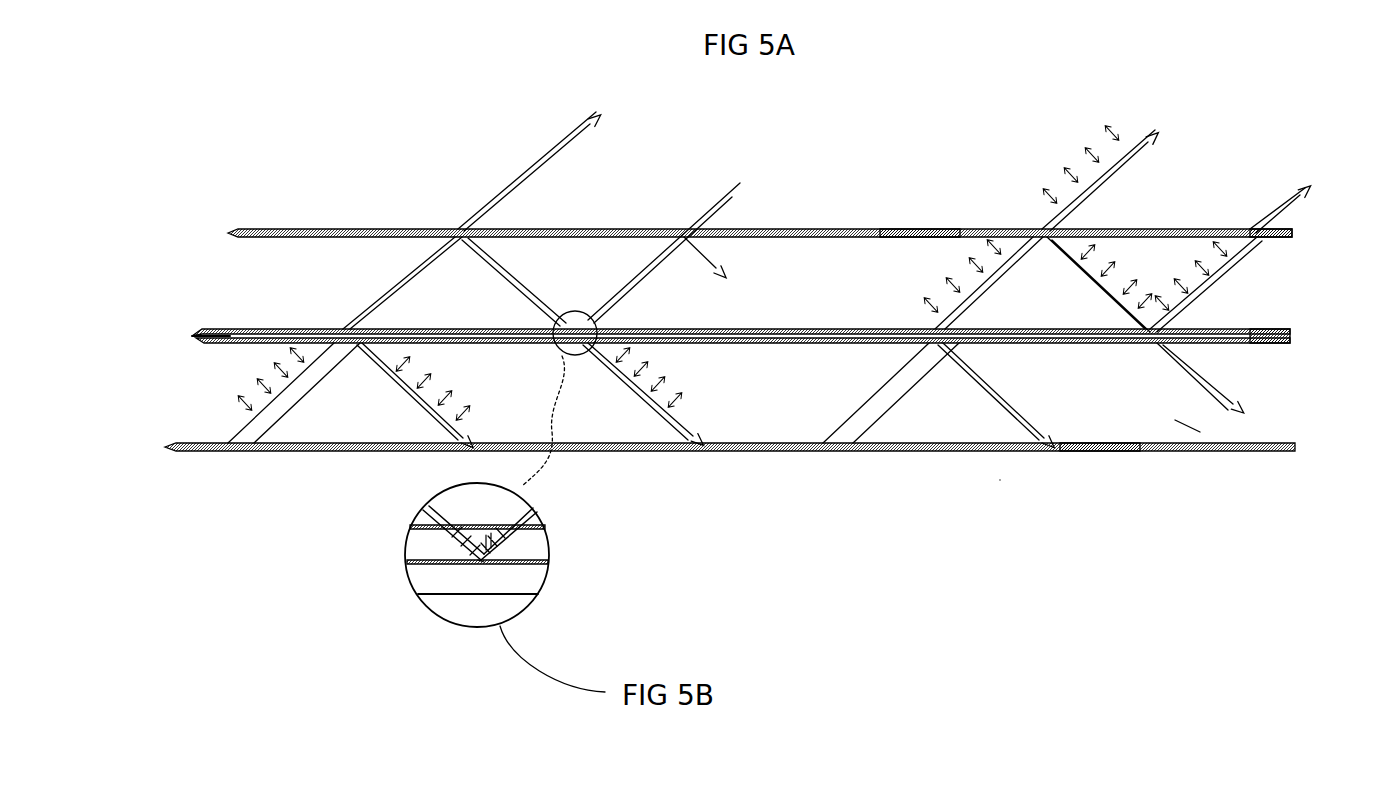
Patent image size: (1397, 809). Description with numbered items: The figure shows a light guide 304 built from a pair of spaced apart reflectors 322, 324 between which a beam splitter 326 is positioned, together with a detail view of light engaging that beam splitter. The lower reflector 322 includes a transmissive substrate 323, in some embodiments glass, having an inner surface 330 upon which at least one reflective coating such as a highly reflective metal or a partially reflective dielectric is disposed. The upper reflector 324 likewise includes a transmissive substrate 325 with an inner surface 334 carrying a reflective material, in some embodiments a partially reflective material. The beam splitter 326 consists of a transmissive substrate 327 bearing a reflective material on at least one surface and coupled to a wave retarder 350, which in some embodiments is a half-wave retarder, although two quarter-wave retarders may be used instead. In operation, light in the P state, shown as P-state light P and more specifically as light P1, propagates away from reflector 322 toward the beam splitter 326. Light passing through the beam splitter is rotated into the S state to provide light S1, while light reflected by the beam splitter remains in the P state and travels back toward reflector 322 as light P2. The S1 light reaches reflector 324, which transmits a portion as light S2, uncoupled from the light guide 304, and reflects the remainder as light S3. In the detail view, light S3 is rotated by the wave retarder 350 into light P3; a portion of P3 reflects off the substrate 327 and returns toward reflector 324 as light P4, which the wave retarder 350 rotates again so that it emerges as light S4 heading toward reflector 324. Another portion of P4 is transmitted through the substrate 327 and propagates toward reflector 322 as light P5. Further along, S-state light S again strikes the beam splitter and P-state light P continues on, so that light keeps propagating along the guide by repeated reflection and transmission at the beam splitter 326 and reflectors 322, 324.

In FIG. 5A, the light guide 304 is at (223, 164).
In FIG. 5A, the reflector 322 is at (1300, 447).
In FIG. 5A, the transmissive substrate 323 is at (1100, 451).
In FIG. 5A, the reflector 324 is at (1305, 232).
In FIG. 5A, the transmissive substrate 325 is at (855, 232).
In FIG. 5A, the beam splitter 326 is at (1305, 337).
In FIG. 5A, the transmissive substrate 327 is at (200, 337).
In FIG. 5B, the transmissive substrate 327 is at (428, 576).
In FIG. 5A, the inner surface 330 is at (1188, 430).
In FIG. 5A, the inner surface 334 is at (903, 240).
In FIG. 5A, the wave retarder 350 is at (260, 330).
In FIG. 5B, the wave retarder 350 is at (520, 552).
In FIG. 5A, the S-state light S is at (933, 393).
In FIG. 5A, the S1 light S1 is at (345, 340).
In FIG. 5A, the S2 light S2 is at (527, 171).
In FIG. 5A, the S3 light S3 is at (519, 282).
In FIG. 5B, the S3 light S3 is at (440, 522).
In FIG. 5A, the S4 light S4 is at (664, 253).
In FIG. 5B, the S4 light S4 is at (525, 512).
In FIG. 5A, the P-state light P is at (1102, 266).
In FIG. 5A, the P1 light P1 is at (255, 378).
In FIG. 5A, the P2 light P2 is at (426, 391).
In FIG. 5B, the P3 light P3 is at (465, 548).
In FIG. 5B, the P4 light P4 is at (500, 558).
In FIG. 5A, the P5 light P5 is at (656, 391).